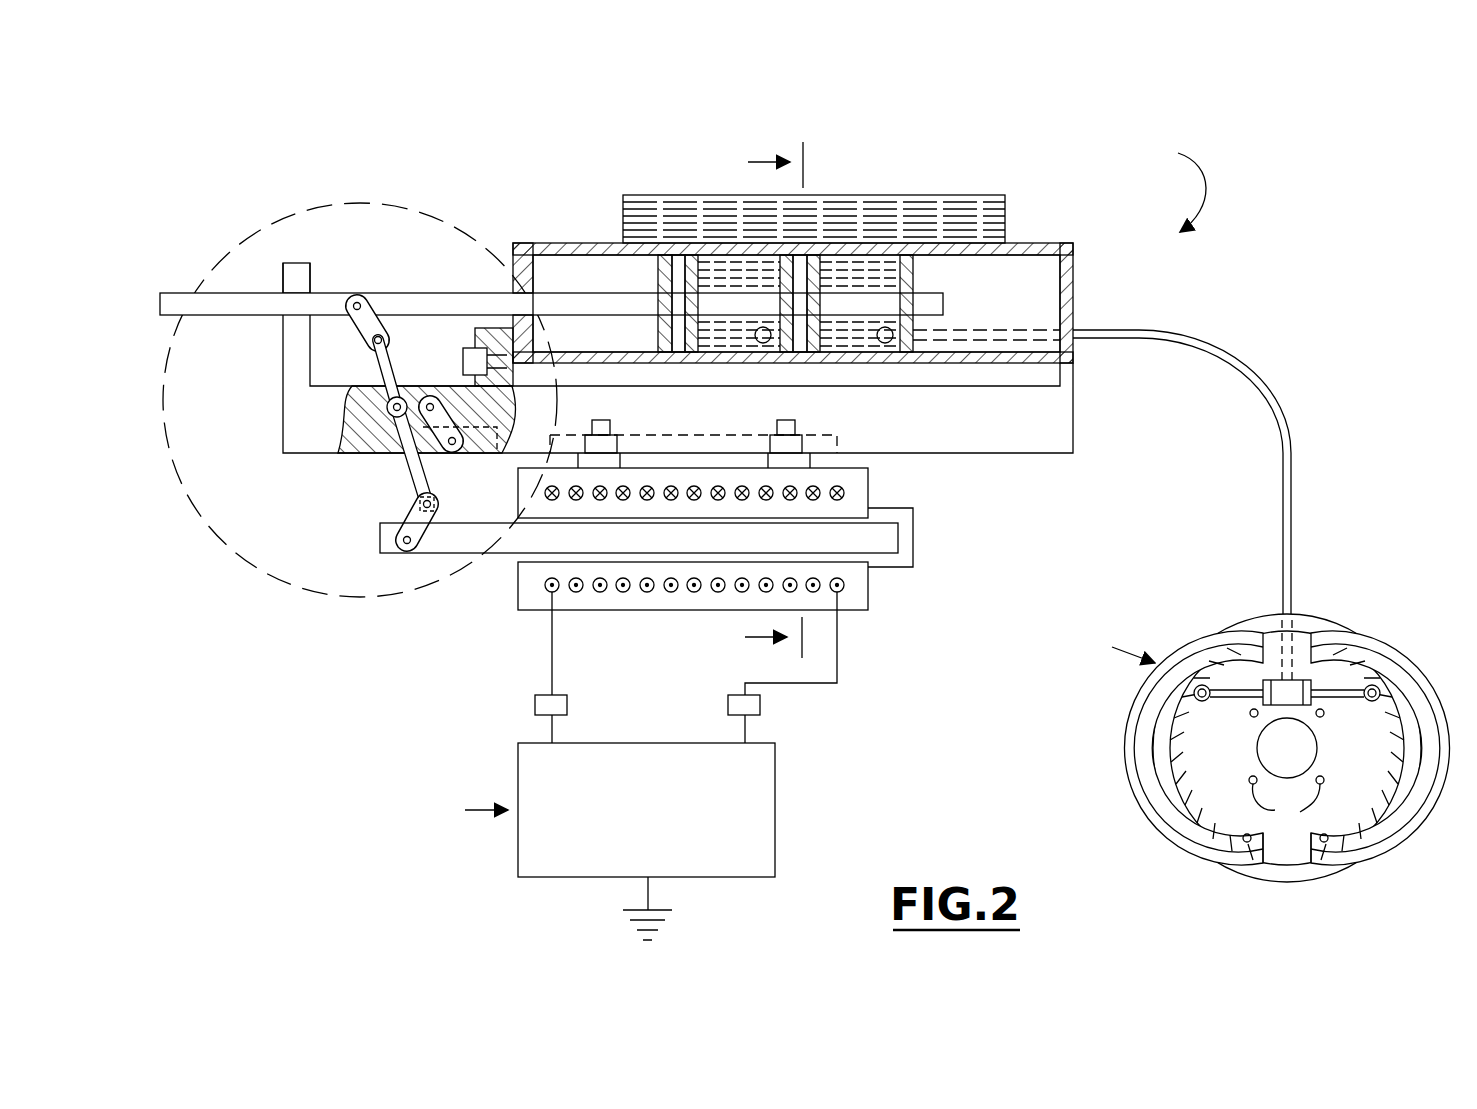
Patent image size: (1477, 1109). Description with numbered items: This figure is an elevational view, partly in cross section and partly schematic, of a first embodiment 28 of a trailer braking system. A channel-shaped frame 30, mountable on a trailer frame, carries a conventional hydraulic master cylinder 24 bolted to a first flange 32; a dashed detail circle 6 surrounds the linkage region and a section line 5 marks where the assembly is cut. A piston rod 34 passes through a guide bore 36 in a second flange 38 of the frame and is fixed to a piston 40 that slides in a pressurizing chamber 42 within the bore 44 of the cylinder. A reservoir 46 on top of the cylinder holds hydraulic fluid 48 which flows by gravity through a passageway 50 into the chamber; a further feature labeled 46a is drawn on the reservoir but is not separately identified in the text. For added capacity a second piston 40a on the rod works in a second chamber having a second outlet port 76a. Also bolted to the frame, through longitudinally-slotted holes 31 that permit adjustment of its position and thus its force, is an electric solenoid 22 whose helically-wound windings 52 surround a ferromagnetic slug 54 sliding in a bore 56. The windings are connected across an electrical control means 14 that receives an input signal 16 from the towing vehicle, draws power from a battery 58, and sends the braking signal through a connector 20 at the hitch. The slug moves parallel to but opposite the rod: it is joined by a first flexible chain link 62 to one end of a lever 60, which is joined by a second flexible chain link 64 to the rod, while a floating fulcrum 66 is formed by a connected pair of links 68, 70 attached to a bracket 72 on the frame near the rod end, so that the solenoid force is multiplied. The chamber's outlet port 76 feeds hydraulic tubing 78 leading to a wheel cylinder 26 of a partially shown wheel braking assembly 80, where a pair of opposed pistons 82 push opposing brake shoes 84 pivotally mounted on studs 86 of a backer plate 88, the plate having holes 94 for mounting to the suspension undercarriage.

The section line 5 is at (774, 403).
The brake pedal 6 is at (290, 592).
The electrical control means 14 is at (624, 820).
The input signal 16 is at (470, 811).
The connector 20 is at (570, 705).
The solenoid 22 is at (868, 598).
The master cylinder 24 is at (598, 243).
The wheel cylinder 26 is at (1300, 690).
The first embodiment 28 is at (1133, 166).
The channel-shaped frame 30 is at (990, 452).
The longitudinally-slotted holes 31 is at (620, 436).
The first flange 32 is at (492, 328).
The piston rod 34 is at (440, 293).
The guide bore 36 is at (234, 255).
The second flange 38 is at (293, 262).
The piston 40 is at (860, 272).
The second piston 40a is at (693, 345).
The pressurizing chamber 42 is at (906, 280).
The bore 44 is at (1010, 258).
The reservoir 46 is at (702, 256).
The armature laminations 46a is at (752, 265).
The hydraulic fluid 48 is at (672, 212).
The passageway 50 is at (812, 262).
The windings 52 is at (718, 592).
The armature or slug 54 is at (525, 537).
The bore 56 is at (527, 548).
The battery 58 is at (662, 912).
The lever 60 is at (410, 470).
The first flexible chain link 62 is at (413, 504).
The second flexible chain link 64 is at (357, 293).
The floating fulcrum 66 is at (357, 387).
The link 68 is at (404, 400).
The link 70 is at (455, 455).
The bracket 72 is at (518, 415).
The outlet port 76 is at (885, 343).
The second outlet port 76a is at (763, 343).
The hydraulic tubing 78 is at (1292, 450).
The wheel braking assembly 80 is at (1073, 651).
The opposed pistons 82 is at (1250, 715).
The brake shoes 84 is at (1208, 822).
The studs 86 is at (1238, 848).
The backer plate 88 is at (1290, 850).
The holes 94 is at (1256, 717).